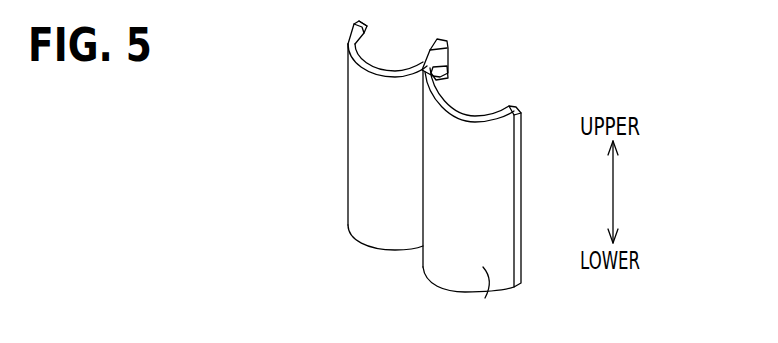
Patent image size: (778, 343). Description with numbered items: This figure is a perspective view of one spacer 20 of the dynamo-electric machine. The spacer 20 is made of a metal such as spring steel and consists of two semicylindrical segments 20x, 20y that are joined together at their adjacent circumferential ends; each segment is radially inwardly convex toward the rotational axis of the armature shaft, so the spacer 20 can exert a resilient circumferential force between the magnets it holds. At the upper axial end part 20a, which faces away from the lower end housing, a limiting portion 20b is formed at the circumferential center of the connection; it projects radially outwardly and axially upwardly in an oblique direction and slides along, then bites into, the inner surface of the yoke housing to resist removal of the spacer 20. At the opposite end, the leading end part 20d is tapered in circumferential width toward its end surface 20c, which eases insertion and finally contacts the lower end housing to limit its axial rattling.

The spacer 20 is at (352, 89).
The axial end part 20a is at (447, 77).
The limiting portion 20b is at (435, 56).
The end surface 20c is at (363, 243).
The leading end part 20d is at (522, 248).
The first semicylindrical segment 20x is at (487, 290).
The second semicylindrical segment 20y is at (366, 183).